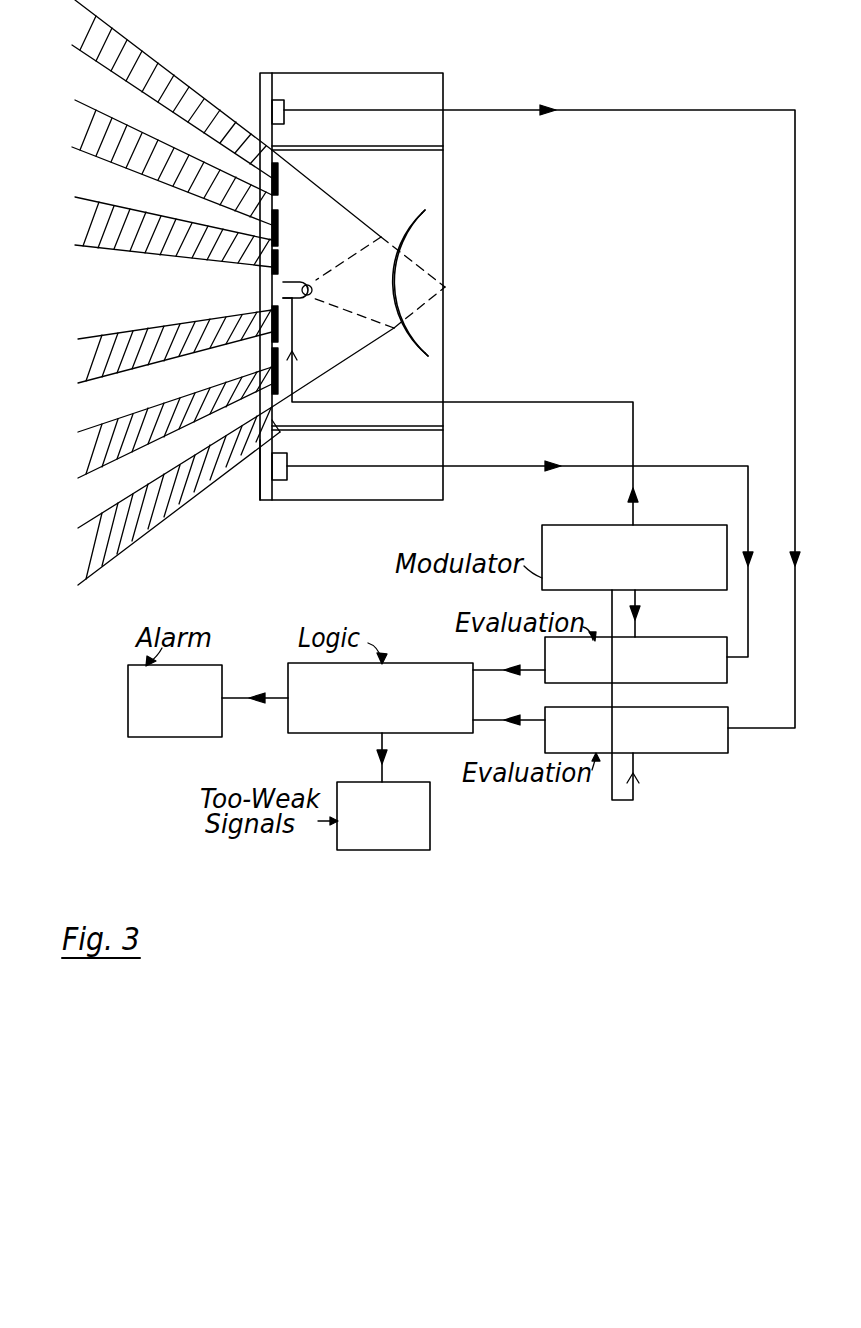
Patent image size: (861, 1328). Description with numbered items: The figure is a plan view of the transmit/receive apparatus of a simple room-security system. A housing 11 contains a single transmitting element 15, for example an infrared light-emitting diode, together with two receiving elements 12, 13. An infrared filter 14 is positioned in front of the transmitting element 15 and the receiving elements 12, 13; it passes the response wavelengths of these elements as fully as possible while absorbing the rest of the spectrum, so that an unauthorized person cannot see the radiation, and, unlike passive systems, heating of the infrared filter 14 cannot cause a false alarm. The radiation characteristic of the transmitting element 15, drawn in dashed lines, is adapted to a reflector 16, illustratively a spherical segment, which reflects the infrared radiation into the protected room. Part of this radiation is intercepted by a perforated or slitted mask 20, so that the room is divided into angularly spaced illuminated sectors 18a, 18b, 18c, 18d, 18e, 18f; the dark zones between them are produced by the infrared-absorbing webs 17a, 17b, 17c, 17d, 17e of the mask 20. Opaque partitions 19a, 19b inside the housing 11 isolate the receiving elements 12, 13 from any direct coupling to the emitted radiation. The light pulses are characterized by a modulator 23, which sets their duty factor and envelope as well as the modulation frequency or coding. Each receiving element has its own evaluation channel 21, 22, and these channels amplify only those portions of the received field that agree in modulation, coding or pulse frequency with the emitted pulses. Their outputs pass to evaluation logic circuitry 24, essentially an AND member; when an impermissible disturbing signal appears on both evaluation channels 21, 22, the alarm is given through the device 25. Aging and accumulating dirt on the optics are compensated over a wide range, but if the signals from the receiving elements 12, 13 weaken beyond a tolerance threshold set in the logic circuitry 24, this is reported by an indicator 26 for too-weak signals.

The housing 11 is at (443, 98).
The receiving element 12 is at (283, 100).
The receiving element 13 is at (282, 479).
The infrared filter 14 is at (266, 472).
The transmitting element 15 is at (283, 290).
The reflector 16 is at (422, 214).
The web 17a is at (278, 180).
The web 17b is at (278, 234).
The web 17c is at (278, 266).
The web 17d is at (278, 332).
The web 17e is at (278, 382).
The illuminated sector 18a is at (149, 89).
The illuminated sector 18b is at (152, 162).
The illuminated sector 18c is at (152, 232).
The illuminated sector 18d is at (152, 346).
The illuminated sector 18e is at (152, 422).
The illuminated sector 18f is at (156, 496).
The opaque partition 19a is at (443, 147).
The opaque partition 19b is at (443, 428).
The mask 20 is at (276, 426).
The evaluation channel 21 is at (660, 681).
The evaluation channel 22 is at (660, 751).
The modulator 23 is at (655, 581).
The evaluation logic circuitry 24 is at (400, 721).
The alarm device 25 is at (195, 724).
The indicator 26 is at (405, 838).